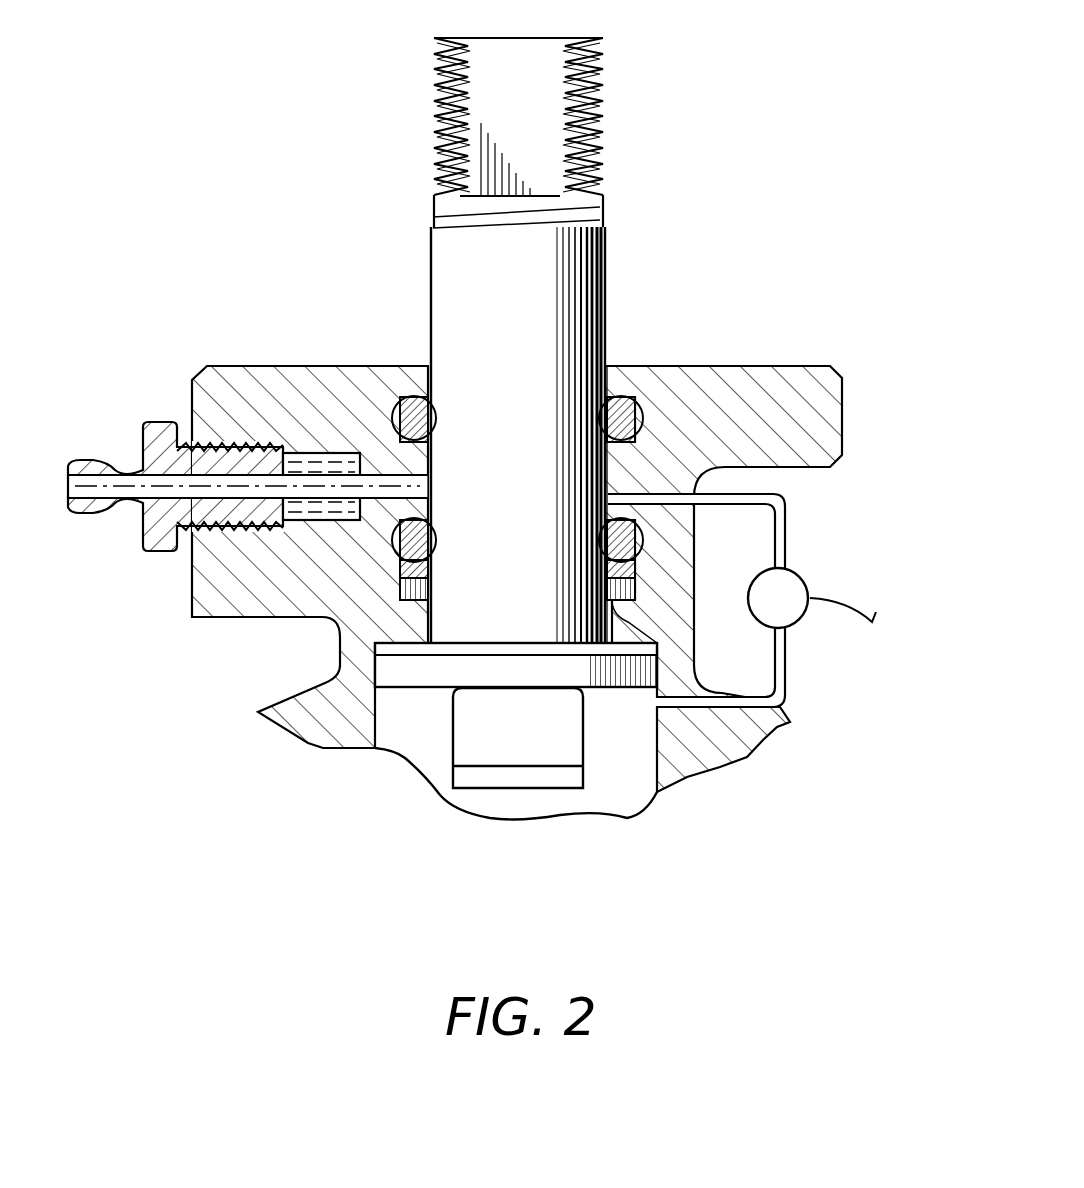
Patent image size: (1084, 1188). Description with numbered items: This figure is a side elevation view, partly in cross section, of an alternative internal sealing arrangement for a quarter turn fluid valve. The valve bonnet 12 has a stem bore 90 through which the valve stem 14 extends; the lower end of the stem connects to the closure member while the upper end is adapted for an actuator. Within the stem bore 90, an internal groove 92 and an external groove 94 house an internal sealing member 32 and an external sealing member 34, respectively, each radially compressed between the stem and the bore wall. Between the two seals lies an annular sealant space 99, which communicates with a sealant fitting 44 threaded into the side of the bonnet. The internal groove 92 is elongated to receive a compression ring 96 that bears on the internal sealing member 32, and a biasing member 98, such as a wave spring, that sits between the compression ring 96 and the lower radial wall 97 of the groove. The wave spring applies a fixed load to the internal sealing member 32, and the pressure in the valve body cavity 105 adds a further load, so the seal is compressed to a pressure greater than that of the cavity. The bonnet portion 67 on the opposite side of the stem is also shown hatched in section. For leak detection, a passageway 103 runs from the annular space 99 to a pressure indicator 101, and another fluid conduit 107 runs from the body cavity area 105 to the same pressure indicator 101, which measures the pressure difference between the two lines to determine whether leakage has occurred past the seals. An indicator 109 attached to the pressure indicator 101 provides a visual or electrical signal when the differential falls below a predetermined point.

The valve bonnet 12 is at (205, 600).
The valve stem 14 is at (468, 740).
The internal sealing member 32 is at (430, 543).
The external sealing member 34 is at (430, 420).
The sealant fitting 44 is at (160, 432).
The housing cover body 67 is at (807, 470).
The stem bore 90 is at (428, 622).
The internal groove 92 is at (430, 508).
The external groove 94 is at (430, 390).
The compression ring 96 is at (430, 569).
The lower radial wall 97 is at (622, 604).
The biasing member 98 is at (428, 594).
The annular sealant space 99 is at (428, 458).
The pressure indicator 101 is at (800, 624).
The passageway 103 is at (783, 541).
The valve body cavity 105 is at (656, 745).
The fluid conduit 107 is at (783, 680).
The indicator 109 is at (842, 595).